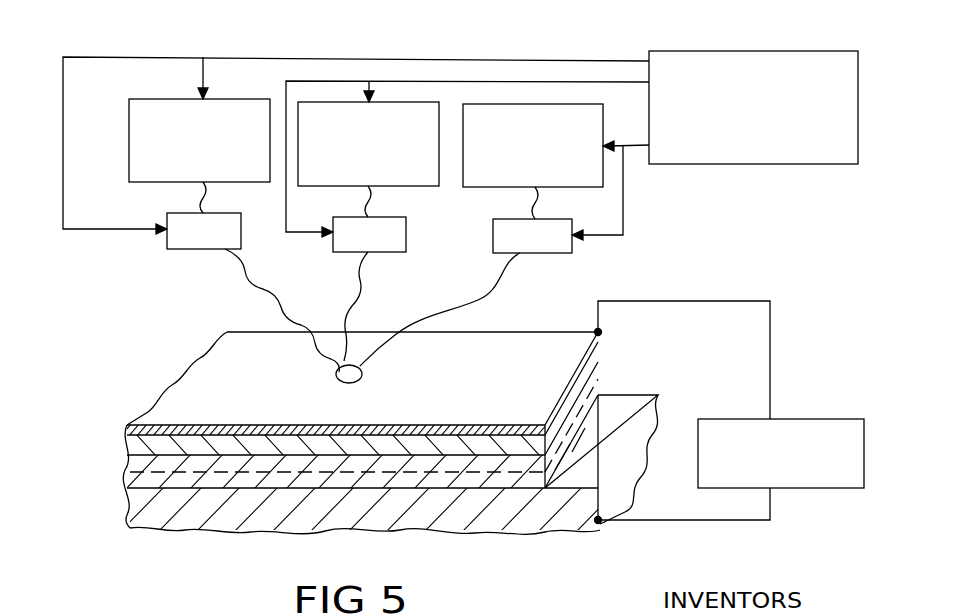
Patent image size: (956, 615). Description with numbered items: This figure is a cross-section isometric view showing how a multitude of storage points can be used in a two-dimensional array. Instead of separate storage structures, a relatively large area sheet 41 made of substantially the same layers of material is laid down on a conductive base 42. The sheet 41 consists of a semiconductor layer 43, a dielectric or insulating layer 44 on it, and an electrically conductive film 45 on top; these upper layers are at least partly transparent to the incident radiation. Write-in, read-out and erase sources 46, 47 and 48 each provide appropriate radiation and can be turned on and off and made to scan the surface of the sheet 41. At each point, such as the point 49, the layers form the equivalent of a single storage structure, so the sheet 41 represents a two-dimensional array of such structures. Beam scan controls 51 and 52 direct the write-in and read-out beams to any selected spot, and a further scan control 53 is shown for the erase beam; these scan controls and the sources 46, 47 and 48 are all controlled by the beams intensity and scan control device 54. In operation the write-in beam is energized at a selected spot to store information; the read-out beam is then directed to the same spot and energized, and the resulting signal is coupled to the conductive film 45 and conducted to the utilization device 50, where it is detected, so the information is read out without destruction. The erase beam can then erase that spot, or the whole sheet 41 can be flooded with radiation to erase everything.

The sheet 41 is at (613, 344).
The conductive base 42 is at (660, 396).
The semiconductor layer 43 is at (122, 455).
The dielectric or insulating layer 44 is at (143, 448).
The electrically conductive film 45 is at (127, 425).
The write-in source 46 is at (130, 98).
The read-out source 47 is at (393, 102).
The erase source 48 is at (603, 118).
The storage point 49 is at (336, 377).
The utilization device 50 is at (810, 419).
The beam scan control for write-in beam 51 is at (167, 249).
The beam scan control for read-out beam 52 is at (406, 250).
The scan unit for erase beam 53 is at (572, 253).
The control device 54 is at (843, 51).